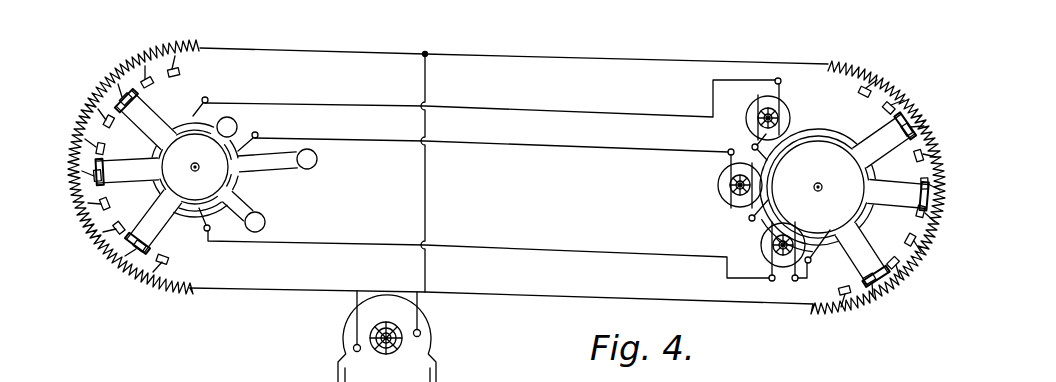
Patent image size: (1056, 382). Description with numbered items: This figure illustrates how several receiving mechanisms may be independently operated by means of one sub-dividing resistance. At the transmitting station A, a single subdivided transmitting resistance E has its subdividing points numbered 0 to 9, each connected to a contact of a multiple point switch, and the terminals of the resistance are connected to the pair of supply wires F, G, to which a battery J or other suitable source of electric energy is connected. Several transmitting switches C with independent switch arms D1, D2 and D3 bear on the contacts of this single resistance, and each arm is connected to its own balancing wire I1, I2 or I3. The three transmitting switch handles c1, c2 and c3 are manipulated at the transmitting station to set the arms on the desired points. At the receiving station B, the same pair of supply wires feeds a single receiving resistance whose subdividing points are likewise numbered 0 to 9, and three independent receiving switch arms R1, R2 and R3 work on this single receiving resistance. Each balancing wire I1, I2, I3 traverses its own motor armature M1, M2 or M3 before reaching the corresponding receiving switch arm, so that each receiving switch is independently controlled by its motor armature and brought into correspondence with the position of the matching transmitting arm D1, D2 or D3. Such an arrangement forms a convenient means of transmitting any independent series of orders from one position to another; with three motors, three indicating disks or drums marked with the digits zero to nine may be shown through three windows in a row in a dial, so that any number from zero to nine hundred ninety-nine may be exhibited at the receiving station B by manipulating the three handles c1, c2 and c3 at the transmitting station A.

The transmitting station A is at (246, 43).
The receiving station B is at (792, 59).
The transmitting switch C is at (496, 298).
The transmitting resistance E is at (85, 222).
The supply wire F is at (498, 55).
The battery J is at (348, 353).
The balancing wire I1 is at (503, 252).
The balancing wire I2 is at (506, 146).
The balancing wire I3 is at (498, 110).
The transmitting switch arm D1 is at (150, 232).
The transmitting switch arm D2 is at (149, 116).
The transmitting switch arm D3 is at (116, 170).
The transmitting switch handle c1 is at (239, 127).
The transmitting switch handle c2 is at (266, 224).
The transmitting switch handle c3 is at (312, 168).
The receiving switch arm R1 is at (872, 258).
The receiving switch arm R2 is at (881, 138).
The receiving switch arm R3 is at (908, 195).
The motor armature M1 is at (760, 256).
The motor armature M2 is at (722, 190).
The motor armature M3 is at (750, 128).
The subdividing point 0 is at (502, 292).
The subdividing point 1 is at (503, 278).
The subdividing point 2 is at (498, 257).
The subdividing point 3 is at (503, 227).
The subdividing point 4 is at (506, 196).
The subdividing point 5 is at (509, 163).
The subdividing point 6 is at (512, 130).
The subdividing point 7 is at (518, 95).
The subdividing point 8 is at (525, 74).
The subdividing point 9 is at (524, 61).